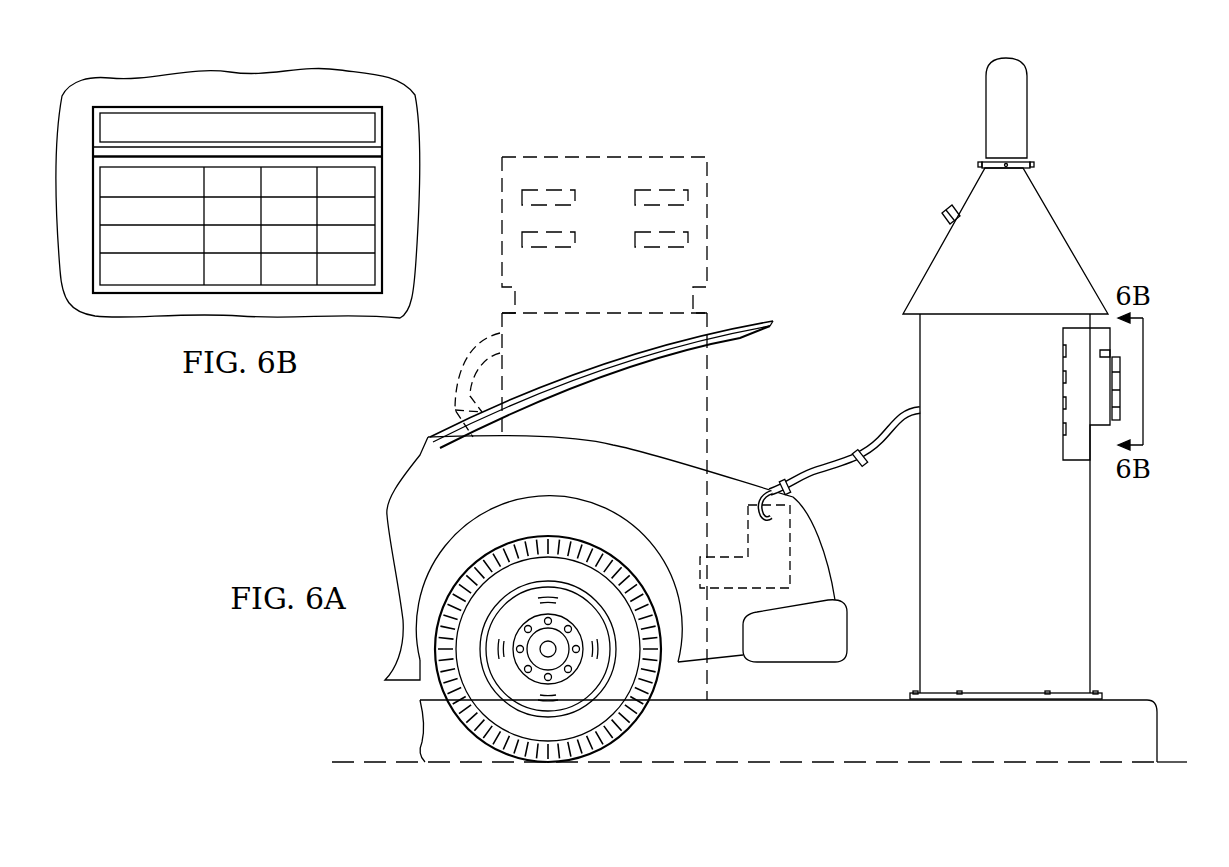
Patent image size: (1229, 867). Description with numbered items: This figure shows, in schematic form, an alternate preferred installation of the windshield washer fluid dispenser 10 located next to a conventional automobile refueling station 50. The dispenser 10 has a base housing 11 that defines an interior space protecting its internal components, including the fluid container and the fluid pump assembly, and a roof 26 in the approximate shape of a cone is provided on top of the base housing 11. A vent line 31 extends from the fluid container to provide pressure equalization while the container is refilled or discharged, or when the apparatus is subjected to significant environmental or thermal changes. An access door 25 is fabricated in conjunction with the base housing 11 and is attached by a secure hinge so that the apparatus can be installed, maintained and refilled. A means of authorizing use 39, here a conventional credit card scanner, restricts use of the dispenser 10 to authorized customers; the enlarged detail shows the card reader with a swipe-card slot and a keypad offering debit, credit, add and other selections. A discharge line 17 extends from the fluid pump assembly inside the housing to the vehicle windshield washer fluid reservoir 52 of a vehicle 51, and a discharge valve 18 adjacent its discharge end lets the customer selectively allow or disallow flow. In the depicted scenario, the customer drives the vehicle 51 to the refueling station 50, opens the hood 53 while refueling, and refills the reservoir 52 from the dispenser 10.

In FIG. 6A, the windshield washer fluid dispenser 10 is at (1032, 430).
In FIG. 6A, the base housing 11 is at (1055, 635).
In FIG. 6A, the discharge line 17 is at (818, 467).
In FIG. 6A, the discharge valve 18 is at (760, 497).
In FIG. 6B, the access door 25 is at (253, 173).
In FIG. 6A, the access door 25 is at (1072, 410).
In FIG. 6A, the roof 26 is at (962, 272).
In FIG. 6A, the vent line 31 is at (945, 212).
In FIG. 6B, the means of authorizing use 39 is at (372, 155).
In FIG. 6A, the means of authorizing use 39 is at (1098, 384).
In FIG. 6A, the automobile refueling station 50 is at (610, 188).
In FIG. 6A, the vehicle 51 is at (608, 478).
In FIG. 6A, the vehicle windshield washer fluid reservoir 52 is at (775, 563).
In FIG. 6A, the hood 53 is at (725, 335).